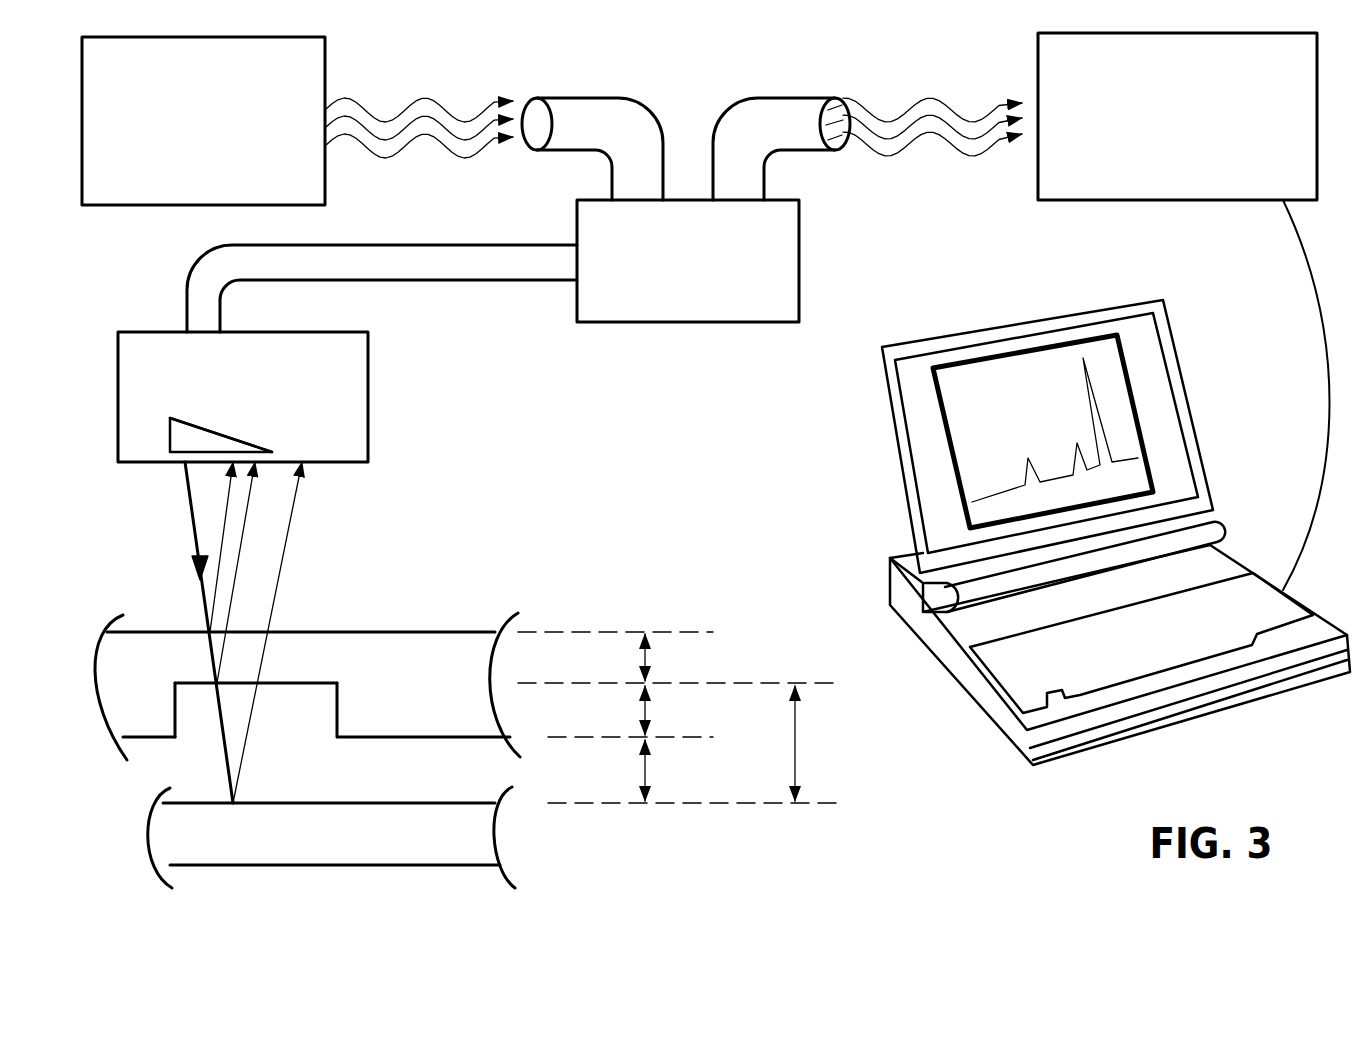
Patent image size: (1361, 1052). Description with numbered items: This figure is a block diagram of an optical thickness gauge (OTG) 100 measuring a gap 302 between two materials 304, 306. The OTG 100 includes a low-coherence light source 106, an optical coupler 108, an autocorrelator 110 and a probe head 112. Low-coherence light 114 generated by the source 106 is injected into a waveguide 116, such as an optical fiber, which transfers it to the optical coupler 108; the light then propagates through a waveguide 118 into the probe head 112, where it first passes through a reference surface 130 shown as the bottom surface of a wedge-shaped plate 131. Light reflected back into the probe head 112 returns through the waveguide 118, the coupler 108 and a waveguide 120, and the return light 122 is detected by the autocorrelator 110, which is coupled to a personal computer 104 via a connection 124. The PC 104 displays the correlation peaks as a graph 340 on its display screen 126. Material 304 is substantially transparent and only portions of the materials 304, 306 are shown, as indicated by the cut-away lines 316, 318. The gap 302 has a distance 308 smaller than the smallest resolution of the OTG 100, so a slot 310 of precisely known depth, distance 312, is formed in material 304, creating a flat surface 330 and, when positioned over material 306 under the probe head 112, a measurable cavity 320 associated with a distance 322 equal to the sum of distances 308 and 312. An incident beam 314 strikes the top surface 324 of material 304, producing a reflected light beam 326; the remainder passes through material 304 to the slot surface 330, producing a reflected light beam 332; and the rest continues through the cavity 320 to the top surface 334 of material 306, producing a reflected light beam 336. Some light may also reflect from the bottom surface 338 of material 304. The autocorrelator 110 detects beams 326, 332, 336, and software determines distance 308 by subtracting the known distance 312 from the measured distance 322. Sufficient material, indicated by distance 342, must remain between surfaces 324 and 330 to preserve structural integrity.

The optical thickness gauge 100 is at (868, 215).
The personal computer 104 is at (1116, 560).
The low-coherence light source 106 is at (272, 189).
The optical coupler 108 is at (745, 310).
The autocorrelator 110 is at (1266, 184).
The probe head 112 is at (315, 449).
The low-coherence light 114 is at (386, 88).
The waveguide 116 is at (577, 98).
The waveguide 118 is at (443, 243).
The waveguide 120 is at (763, 98).
The return light 122 is at (893, 96).
The connection 124 is at (1320, 510).
The display screen 126 is at (1089, 418).
The reference surface 130 is at (212, 440).
The wedge-shaped plate 131 is at (242, 440).
The gap 302 is at (462, 766).
The material 304 is at (287, 719).
The material 306 is at (322, 841).
The distance 308 is at (693, 771).
The slot 310 is at (203, 722).
The distance 312 is at (630, 711).
The incident beam 314 is at (195, 530).
The cut-away lines 316 is at (490, 668).
The cut-away lines 318 is at (153, 842).
The cavity 320 is at (302, 702).
The distance 322 is at (819, 743).
The top surface 324 is at (178, 633).
The reflected light beam 326 is at (222, 538).
The surface 330 is at (288, 683).
The reflected light beam 332 is at (242, 565).
The top surface 334 is at (300, 808).
The reflected light beam 336 is at (278, 598).
The bottom surface 338 is at (395, 735).
The graph 340 is at (982, 495).
The distance 342 is at (678, 657).